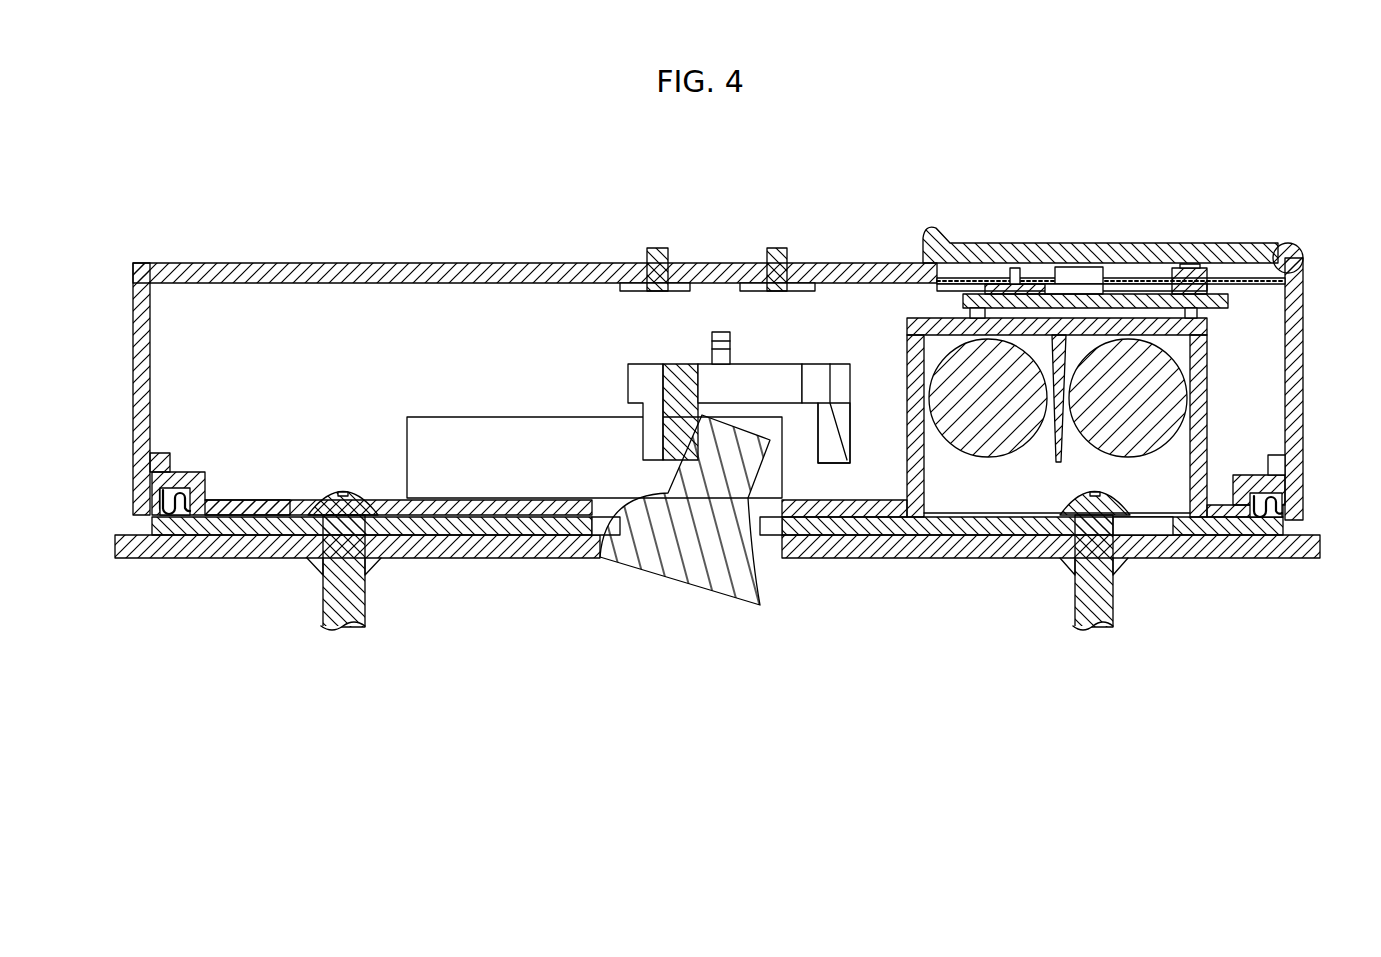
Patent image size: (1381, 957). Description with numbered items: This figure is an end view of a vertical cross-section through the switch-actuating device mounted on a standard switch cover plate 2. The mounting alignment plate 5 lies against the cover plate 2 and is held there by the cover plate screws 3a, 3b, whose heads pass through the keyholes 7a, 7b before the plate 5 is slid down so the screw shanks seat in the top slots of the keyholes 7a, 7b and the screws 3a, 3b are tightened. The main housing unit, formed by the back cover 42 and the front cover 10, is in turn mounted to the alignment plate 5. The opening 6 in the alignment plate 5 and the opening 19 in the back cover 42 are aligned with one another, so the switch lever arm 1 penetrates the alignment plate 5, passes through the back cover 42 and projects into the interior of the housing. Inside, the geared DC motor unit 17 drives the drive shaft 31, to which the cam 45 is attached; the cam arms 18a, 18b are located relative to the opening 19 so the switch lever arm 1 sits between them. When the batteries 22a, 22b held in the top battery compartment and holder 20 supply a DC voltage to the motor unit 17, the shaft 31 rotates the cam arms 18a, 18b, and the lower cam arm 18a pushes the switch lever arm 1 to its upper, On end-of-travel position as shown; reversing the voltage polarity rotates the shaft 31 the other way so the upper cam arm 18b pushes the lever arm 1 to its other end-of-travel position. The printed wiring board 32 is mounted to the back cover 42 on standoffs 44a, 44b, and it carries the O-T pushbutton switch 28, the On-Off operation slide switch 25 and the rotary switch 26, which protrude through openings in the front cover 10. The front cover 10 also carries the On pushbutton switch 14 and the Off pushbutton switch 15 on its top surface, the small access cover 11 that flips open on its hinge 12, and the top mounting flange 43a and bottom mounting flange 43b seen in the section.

The switch lever arm 1 is at (650, 577).
The switch cover plate 2 is at (140, 558).
The cover plate screw 3a is at (1095, 630).
The cover plate screw 3b is at (345, 630).
The mounting alignment plate 5 is at (1283, 530).
The opening 6 is at (598, 520).
The keyhole 7a is at (1130, 535).
The keyhole 7b is at (400, 535).
The front cover 10 is at (133, 328).
The access cover 11 is at (1150, 243).
The hinge 12 is at (1300, 246).
The On pushbutton switch 14 is at (777, 248).
The Off pushbutton switch 15 is at (660, 248).
The geared DC motor unit 17 is at (500, 417).
The cam arm 18a is at (645, 445).
The cam arm 18b is at (826, 463).
The opening 19 is at (766, 515).
The battery compartment and holder 20 is at (1163, 500).
The battery 22a is at (1187, 372).
The battery 22b is at (1012, 458).
The On-Off operation slide switch 25 is at (1205, 268).
The rotary switch 26 is at (1093, 267).
The O-T pushbutton switch 28 is at (1012, 266).
The drive shaft 31 is at (720, 332).
The printed wiring board 32 is at (1048, 294).
The back cover 42 is at (205, 472).
The top mounting flange 43a is at (1280, 440).
The bottom mounting flange 43b is at (165, 452).
The standoff 44a is at (1207, 313).
The standoff 44b is at (970, 313).
The cam 45 is at (775, 364).